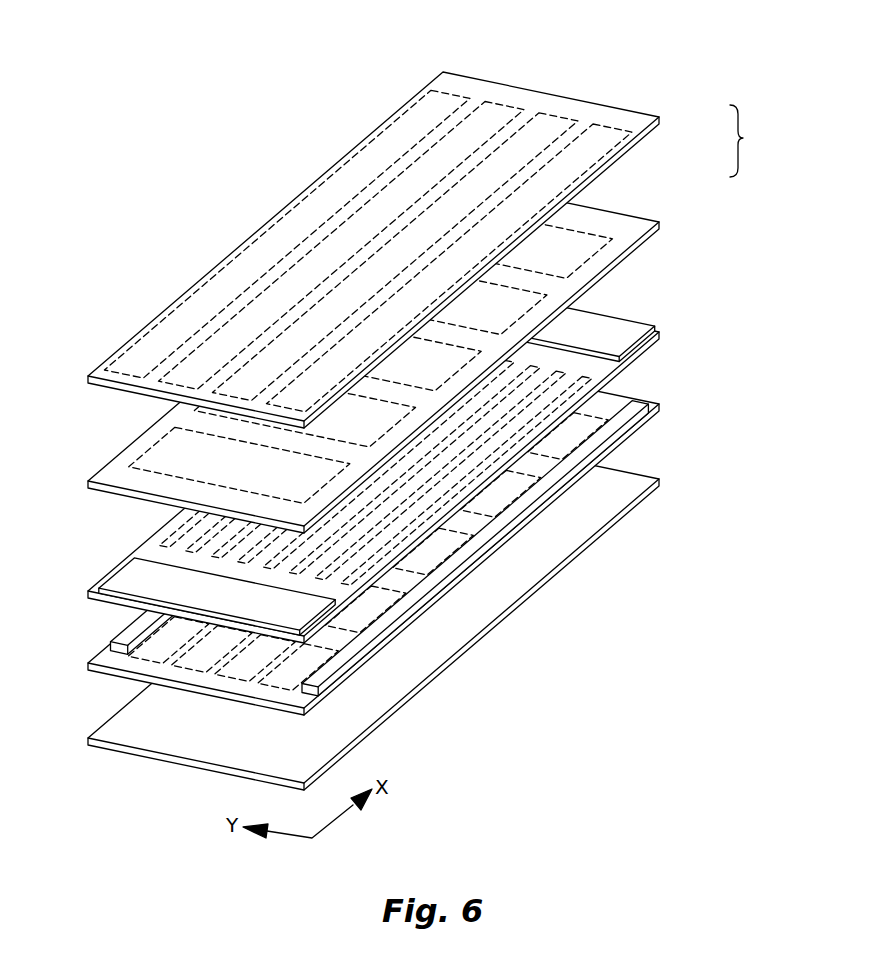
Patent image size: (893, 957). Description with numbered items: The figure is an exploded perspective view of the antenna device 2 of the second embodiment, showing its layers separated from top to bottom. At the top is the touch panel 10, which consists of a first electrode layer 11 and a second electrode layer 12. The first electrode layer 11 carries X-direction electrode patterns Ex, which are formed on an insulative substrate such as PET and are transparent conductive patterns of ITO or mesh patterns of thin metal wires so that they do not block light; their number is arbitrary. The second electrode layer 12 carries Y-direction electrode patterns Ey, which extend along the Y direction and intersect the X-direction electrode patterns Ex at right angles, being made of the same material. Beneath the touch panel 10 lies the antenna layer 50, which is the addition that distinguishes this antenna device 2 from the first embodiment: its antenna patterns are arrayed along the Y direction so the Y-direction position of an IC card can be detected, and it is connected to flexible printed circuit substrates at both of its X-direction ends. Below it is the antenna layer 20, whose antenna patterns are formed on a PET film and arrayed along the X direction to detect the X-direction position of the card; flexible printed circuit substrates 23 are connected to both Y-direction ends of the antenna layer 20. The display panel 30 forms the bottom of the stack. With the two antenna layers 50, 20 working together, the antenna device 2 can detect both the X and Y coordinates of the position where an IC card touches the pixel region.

The antenna device 2 is at (630, 46).
The touch panel 10 is at (751, 141).
The first electrode layer 11 is at (653, 116).
The second electrode layer 12 is at (664, 217).
The antenna layer 50 is at (618, 321).
The antenna layer 20 is at (628, 388).
The flexible printed circuit (FPC) substrates 23 is at (121, 637).
The display panel 30 is at (648, 473).
The X-direction electrode patterns Ex is at (406, 110).
The Y-direction electrode patterns Ey is at (142, 455).